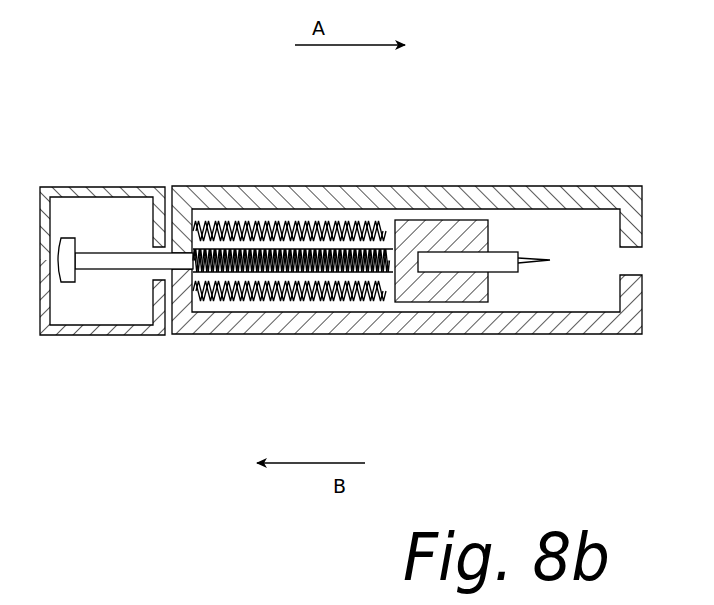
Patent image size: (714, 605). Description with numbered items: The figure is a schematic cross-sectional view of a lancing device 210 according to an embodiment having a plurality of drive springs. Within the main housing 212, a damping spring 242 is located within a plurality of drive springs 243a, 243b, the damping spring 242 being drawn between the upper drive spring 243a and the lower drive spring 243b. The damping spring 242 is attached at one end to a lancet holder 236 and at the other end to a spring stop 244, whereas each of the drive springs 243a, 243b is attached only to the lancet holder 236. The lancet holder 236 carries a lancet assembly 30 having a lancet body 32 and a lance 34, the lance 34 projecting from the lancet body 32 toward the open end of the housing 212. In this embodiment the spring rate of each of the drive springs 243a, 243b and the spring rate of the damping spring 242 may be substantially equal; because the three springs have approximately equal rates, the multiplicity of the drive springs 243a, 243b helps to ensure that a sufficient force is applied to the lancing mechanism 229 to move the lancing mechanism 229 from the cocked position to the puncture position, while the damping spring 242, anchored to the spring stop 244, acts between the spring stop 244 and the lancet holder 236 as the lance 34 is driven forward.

The lancing device 210 is at (587, 116).
The main housing 212 is at (268, 334).
The lancing mechanism 229 is at (401, 313).
The lancet holder 236 is at (452, 220).
The damping spring 242 is at (313, 246).
The drive spring 243a is at (212, 228).
The drive spring 243b is at (215, 302).
The spring stop 244 is at (168, 228).
The lancet assembly 30 is at (504, 288).
The lancet body 32 is at (507, 252).
The lance 34 is at (542, 262).